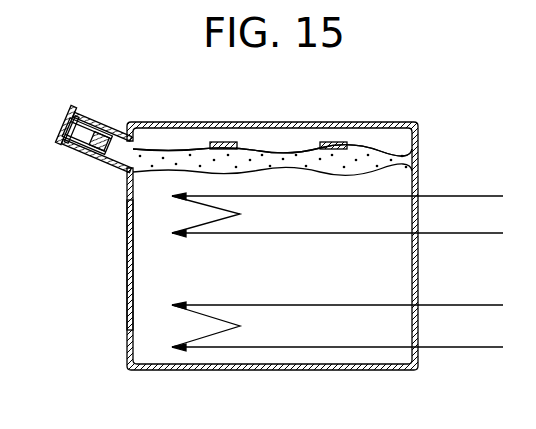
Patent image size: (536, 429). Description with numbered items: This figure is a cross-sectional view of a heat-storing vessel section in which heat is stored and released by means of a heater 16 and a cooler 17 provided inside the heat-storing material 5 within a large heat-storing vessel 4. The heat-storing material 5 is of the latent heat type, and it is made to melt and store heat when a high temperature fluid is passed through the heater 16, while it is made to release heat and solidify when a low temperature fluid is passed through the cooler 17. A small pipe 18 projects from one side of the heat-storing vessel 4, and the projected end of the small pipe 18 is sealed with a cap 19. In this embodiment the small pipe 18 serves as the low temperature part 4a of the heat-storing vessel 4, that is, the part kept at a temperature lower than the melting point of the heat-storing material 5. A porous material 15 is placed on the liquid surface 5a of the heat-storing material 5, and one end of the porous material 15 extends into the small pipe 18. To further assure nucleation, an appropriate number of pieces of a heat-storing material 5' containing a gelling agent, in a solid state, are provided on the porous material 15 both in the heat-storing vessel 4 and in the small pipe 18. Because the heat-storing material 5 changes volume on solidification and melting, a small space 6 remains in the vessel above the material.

The heat-storing vessel 4 is at (126, 273).
The low temperature part 4a is at (95, 134).
The heat-storing material 5 is at (121, 265).
The heat-storing material containing a gelling agent 5' is at (218, 119).
The liquid surface 5a is at (183, 171).
The gap space 6 is at (276, 147).
The porous material 15 is at (384, 154).
The heater 16 is at (217, 336).
The cooler 17 is at (198, 235).
The small pipe 18 is at (99, 160).
The cap 19 is at (89, 118).